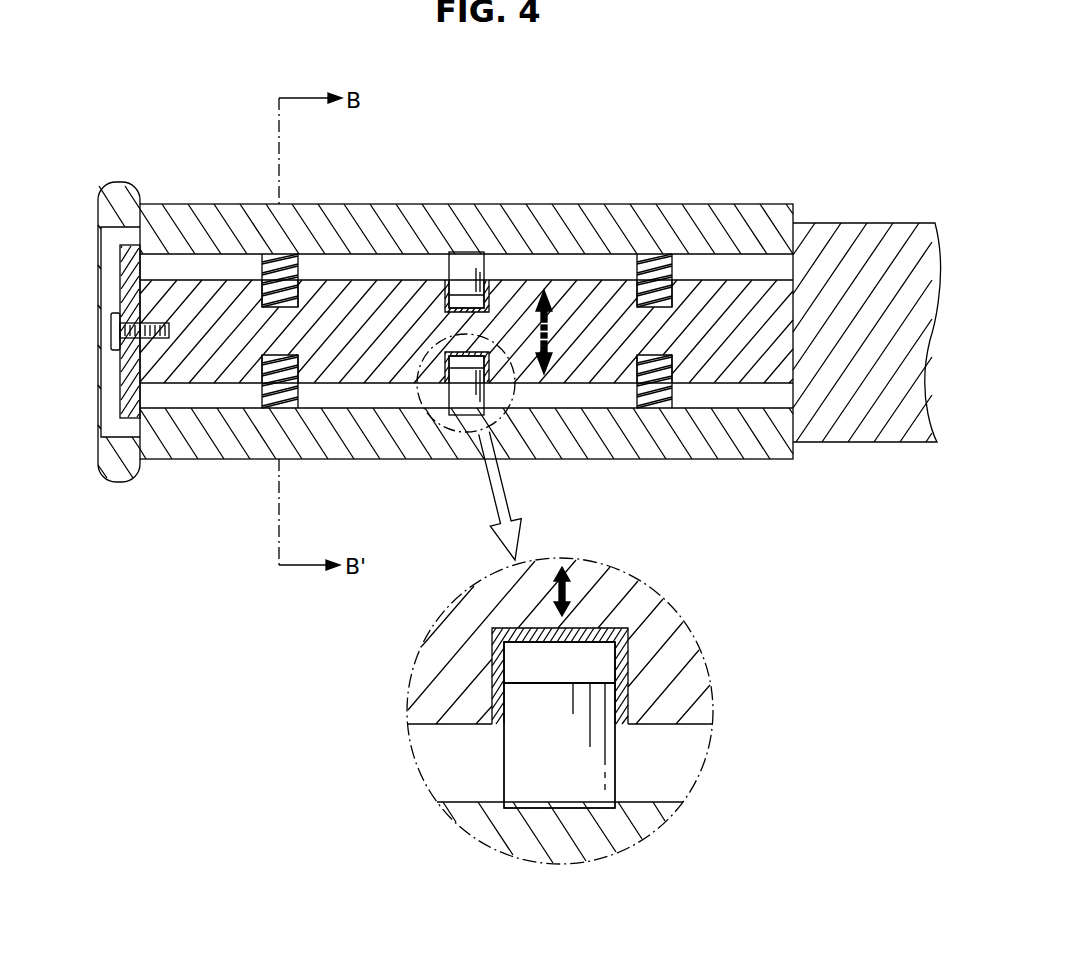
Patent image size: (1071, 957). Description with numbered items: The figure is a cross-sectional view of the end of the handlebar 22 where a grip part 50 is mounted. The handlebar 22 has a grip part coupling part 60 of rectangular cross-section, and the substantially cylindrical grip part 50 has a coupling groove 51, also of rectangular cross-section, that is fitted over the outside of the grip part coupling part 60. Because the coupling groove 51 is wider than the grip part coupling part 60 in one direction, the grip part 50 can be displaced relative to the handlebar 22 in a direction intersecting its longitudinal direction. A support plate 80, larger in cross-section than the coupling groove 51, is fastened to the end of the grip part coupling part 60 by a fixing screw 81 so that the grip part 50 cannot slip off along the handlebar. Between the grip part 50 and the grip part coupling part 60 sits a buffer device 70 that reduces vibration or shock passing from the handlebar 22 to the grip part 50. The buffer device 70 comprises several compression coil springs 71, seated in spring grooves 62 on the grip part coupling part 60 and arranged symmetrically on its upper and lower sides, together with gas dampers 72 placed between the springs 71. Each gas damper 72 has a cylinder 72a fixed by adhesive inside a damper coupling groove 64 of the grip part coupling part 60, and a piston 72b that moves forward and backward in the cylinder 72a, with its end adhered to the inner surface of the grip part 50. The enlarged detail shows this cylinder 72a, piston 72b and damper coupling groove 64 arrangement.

The handlebar 22 is at (872, 232).
The grip part 50 is at (466, 198).
The coupling groove 51 is at (580, 255).
The grip part coupling part 60 is at (370, 300).
The spring groove 62 is at (277, 367).
The damper coupling groove 64 is at (492, 668).
The buffer device 70 is at (690, 266).
The spring 71 is at (265, 287).
The gas damper 72 is at (492, 260).
The cylinder 72a is at (630, 665).
The piston 72b is at (592, 772).
The support plate 80 is at (125, 290).
The fixing screw 81 is at (112, 332).